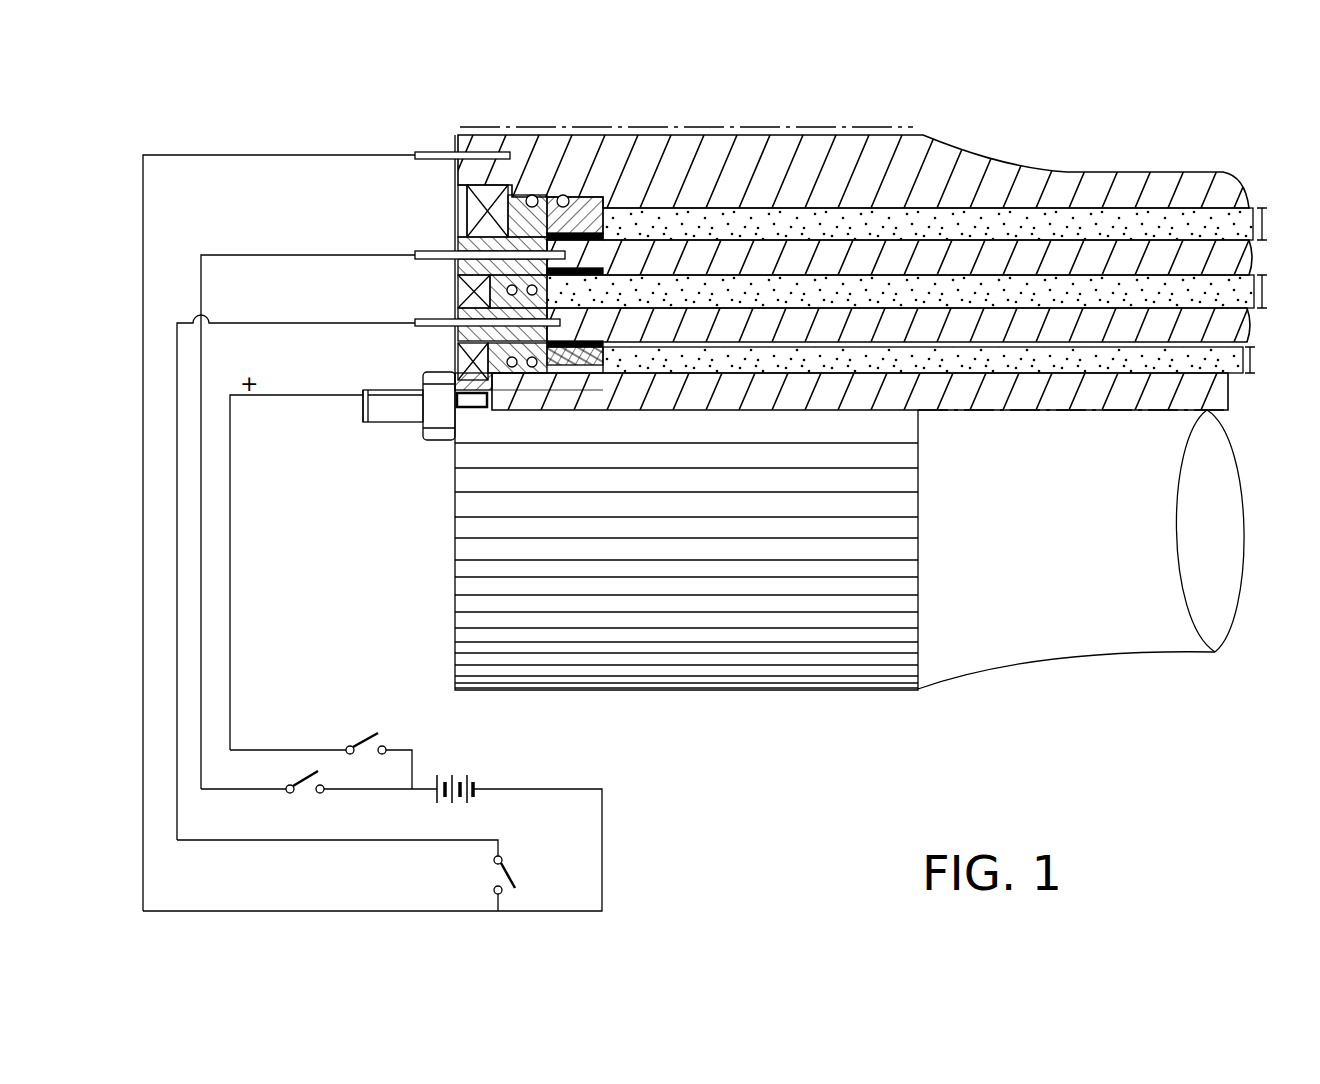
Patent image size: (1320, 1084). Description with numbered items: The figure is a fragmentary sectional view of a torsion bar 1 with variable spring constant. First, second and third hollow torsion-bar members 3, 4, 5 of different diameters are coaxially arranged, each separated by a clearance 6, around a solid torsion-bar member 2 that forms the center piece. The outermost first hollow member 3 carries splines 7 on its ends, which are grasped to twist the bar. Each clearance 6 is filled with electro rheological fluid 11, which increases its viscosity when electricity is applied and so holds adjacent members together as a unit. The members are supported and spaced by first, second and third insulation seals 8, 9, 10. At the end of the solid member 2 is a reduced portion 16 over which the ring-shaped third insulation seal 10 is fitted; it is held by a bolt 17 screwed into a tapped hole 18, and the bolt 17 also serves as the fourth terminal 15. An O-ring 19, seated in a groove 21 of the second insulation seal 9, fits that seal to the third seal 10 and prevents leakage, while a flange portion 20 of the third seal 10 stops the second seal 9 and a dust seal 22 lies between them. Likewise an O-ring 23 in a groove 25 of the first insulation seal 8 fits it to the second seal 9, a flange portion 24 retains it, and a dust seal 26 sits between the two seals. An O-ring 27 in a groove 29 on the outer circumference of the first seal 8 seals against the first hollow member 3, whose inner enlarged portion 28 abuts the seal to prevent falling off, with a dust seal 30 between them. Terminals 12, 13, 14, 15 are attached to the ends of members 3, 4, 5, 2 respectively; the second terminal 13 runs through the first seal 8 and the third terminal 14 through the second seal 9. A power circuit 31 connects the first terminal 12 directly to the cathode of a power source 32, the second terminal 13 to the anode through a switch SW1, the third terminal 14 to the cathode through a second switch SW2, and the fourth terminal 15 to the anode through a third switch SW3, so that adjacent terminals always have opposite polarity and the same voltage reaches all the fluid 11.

The torsion bar 1 is at (937, 705).
The solid torsion-bar member 2 is at (1222, 398).
The first hollow torsion-bar member 3 is at (1236, 187).
The second hollow torsion-bar member 4 is at (1240, 260).
The third hollow torsion-bar member 5 is at (1242, 330).
The clearance 6 is at (1265, 292).
The splines 7 is at (802, 130).
The first insulation seal 8 is at (452, 237).
The second insulation seal 9 is at (452, 306).
The third insulation seal 10 is at (423, 377).
The electro rheological fluid 11 is at (978, 371).
The first terminal 12 is at (418, 155).
The second terminal 13 is at (430, 253).
The third terminal 14 is at (420, 322).
The fourth terminal 15 is at (371, 420).
The reduced portion 16 is at (490, 402).
The bolt 17 is at (433, 420).
The hole 18 is at (450, 441).
The O-ring 19 is at (532, 383).
The flange portion 20 is at (597, 358).
The groove 21 is at (567, 362).
The dust seal 22 is at (460, 349).
The O-ring 23 is at (564, 322).
The flange portion 24 is at (566, 255).
The groove 25 is at (560, 283).
The dust seal 26 is at (458, 289).
The O-ring 27 is at (563, 195).
The inner enlarged portion 28 is at (593, 198).
The groove 29 is at (535, 196).
The dust seal 30 is at (457, 206).
The power circuit 31 is at (403, 819).
The power source 32 is at (443, 770).
The switch SW1 is at (298, 797).
The second switch SW2 is at (475, 875).
The third switch SW3 is at (362, 758).